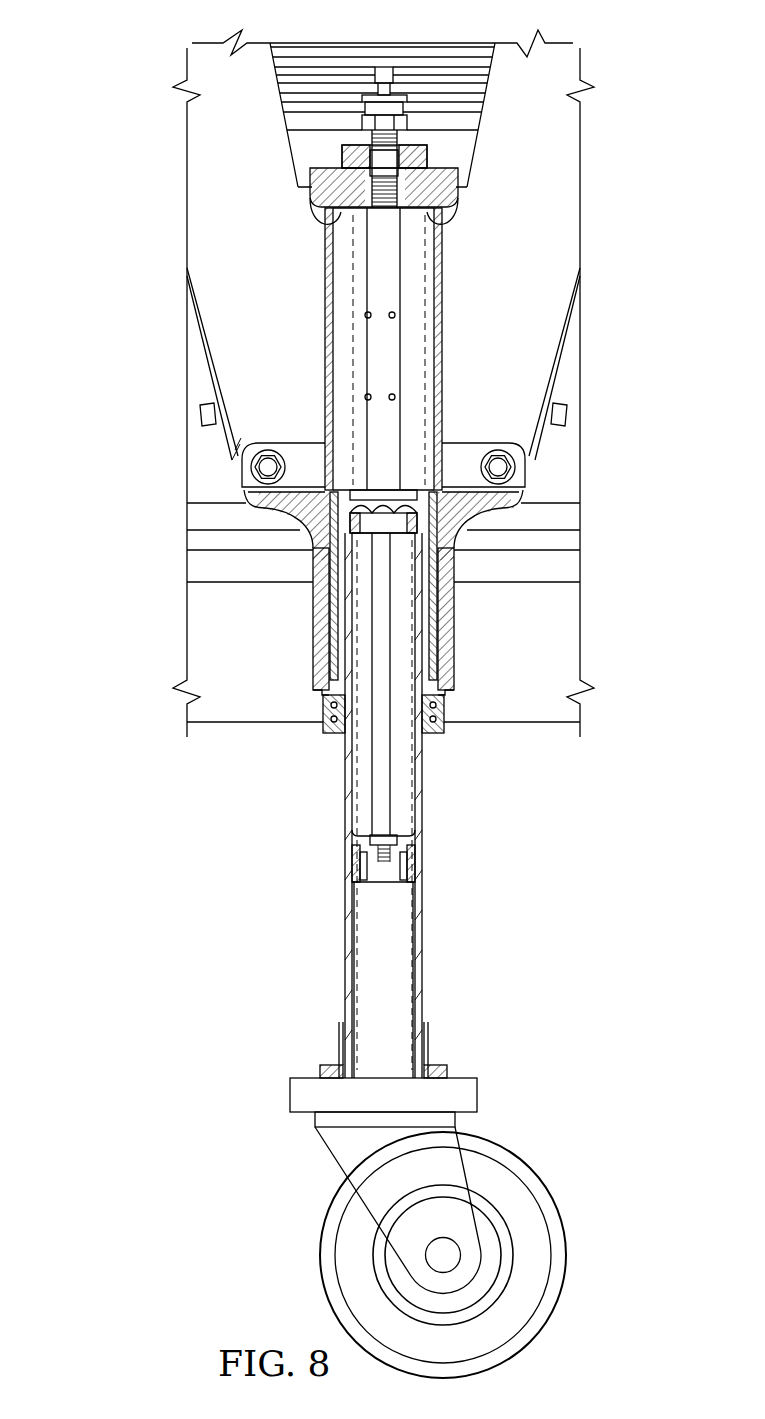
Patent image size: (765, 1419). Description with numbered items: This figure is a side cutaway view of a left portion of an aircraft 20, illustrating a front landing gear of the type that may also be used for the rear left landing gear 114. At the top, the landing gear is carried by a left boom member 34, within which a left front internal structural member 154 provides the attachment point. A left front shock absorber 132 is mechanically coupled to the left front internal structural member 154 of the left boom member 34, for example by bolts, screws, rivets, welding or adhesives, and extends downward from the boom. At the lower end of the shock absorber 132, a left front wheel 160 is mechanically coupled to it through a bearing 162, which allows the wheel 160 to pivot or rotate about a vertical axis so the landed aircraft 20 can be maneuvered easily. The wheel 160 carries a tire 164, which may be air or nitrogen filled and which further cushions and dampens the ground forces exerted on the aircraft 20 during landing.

The aircraft 20 is at (90, 64).
The left front internal structural member 154 is at (205, 200).
The left boom member 34 is at (266, 661).
The left front shock absorber 132 is at (442, 322).
The rear left landing gear 114 is at (435, 772).
The bearing 162 is at (290, 1095).
The left front wheel 160 is at (520, 1139).
The tire 164 is at (566, 1254).